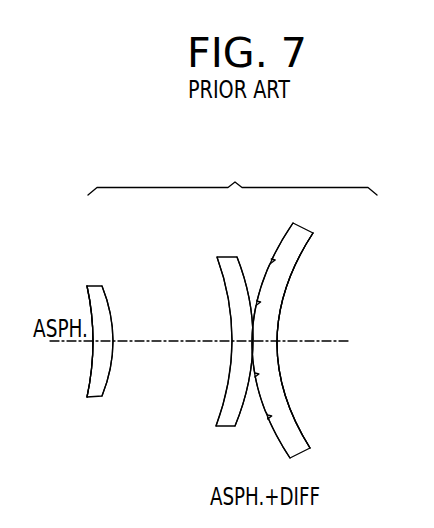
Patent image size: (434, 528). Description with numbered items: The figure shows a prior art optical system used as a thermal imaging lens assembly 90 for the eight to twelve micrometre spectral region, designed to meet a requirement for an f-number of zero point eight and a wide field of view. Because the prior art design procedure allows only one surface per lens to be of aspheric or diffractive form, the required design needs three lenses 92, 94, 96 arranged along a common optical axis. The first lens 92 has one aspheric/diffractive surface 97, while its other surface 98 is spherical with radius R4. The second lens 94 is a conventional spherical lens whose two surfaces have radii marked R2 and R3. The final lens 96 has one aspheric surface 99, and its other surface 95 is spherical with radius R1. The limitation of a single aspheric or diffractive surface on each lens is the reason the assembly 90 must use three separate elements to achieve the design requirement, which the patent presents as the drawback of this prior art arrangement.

The lens assembly 90 is at (232, 175).
The first lens 92 is at (296, 225).
The second lens 94 is at (219, 256).
The spherical surface 95 is at (102, 388).
The final lens 96 is at (101, 286).
The aspheric/diffractive surface 97 is at (272, 432).
The spherical surface 98 is at (296, 410).
The aspheric surface 99 is at (87, 363).
The radius R1 is at (106, 294).
The radius R2 is at (215, 341).
The radius R3 is at (245, 279).
The radius R4 is at (298, 264).